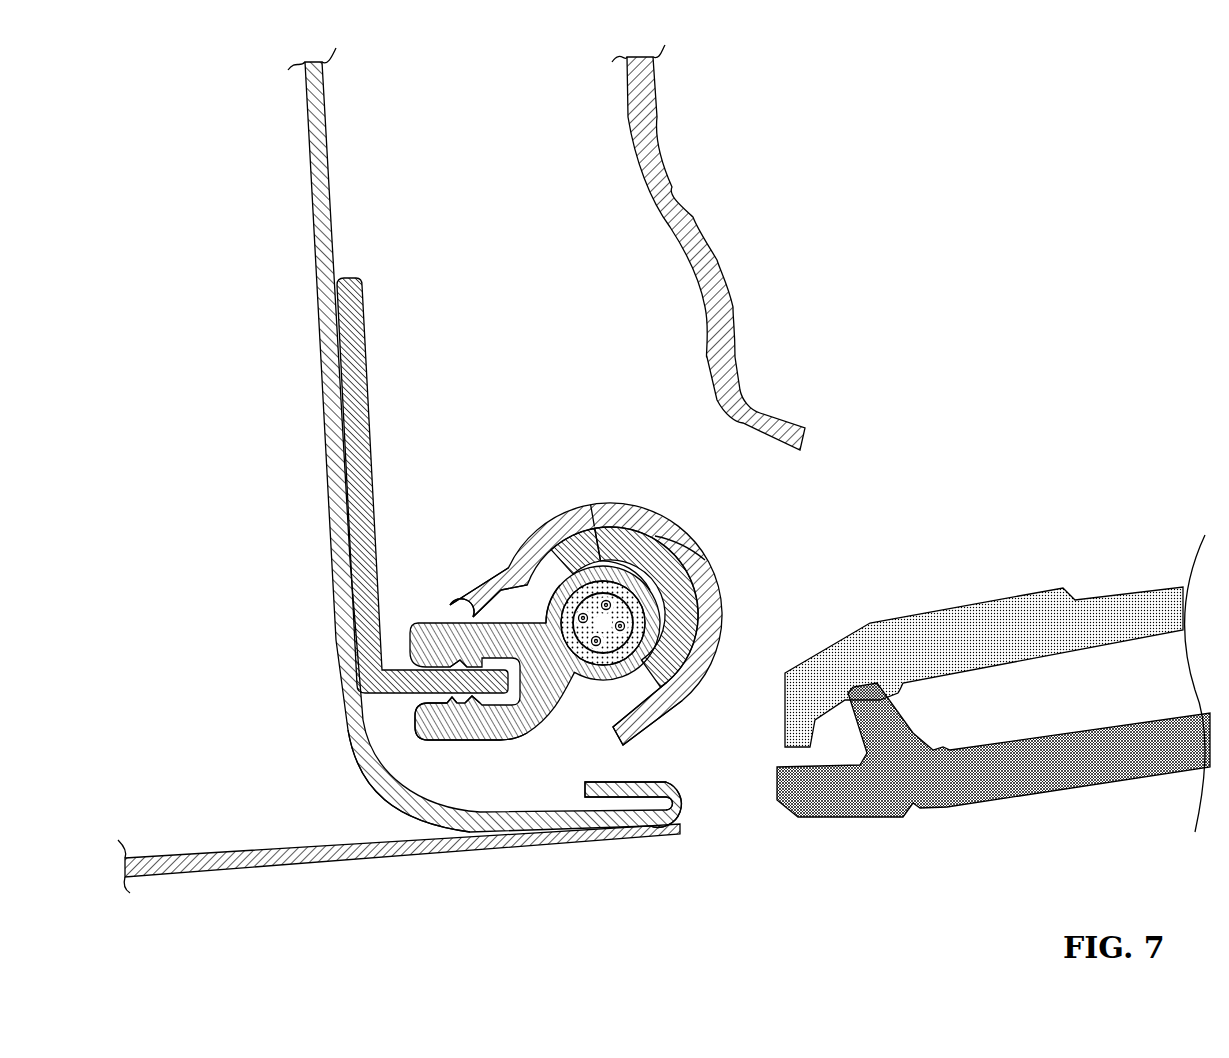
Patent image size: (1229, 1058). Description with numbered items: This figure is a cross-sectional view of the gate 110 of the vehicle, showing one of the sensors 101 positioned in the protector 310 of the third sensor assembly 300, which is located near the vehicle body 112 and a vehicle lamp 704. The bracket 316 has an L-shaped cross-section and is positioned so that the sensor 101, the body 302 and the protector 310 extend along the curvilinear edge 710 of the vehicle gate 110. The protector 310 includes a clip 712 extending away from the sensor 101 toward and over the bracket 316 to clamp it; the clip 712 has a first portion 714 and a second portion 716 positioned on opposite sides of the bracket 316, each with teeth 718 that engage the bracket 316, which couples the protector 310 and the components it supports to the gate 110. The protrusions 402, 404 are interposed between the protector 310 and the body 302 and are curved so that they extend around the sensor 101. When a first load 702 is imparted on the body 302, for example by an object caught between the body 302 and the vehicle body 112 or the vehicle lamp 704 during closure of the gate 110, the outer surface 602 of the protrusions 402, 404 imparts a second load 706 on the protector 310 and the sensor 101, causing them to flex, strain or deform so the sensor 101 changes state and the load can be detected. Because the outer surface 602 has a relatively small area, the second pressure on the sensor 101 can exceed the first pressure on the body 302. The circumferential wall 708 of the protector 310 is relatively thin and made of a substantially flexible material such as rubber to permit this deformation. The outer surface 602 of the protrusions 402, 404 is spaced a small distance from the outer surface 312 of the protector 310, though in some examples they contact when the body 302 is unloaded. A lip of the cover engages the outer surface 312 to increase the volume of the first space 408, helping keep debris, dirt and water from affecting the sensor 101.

The gate 110 is at (447, 489).
The vehicle body 112 is at (715, 265).
The bracket 316 is at (360, 300).
The third sensor assembly 300 is at (620, 549).
The body 302 is at (720, 622).
The protrusion 402 is at (587, 507).
The protrusion 404 is at (593, 528).
The first space 408 is at (523, 603).
The first load 702 is at (708, 542).
The second load 706 is at (735, 566).
The circumferential wall 708 is at (560, 580).
The outer surface 312 is at (520, 580).
The first portion 714 is at (433, 624).
The second portion 716 is at (453, 745).
The teeth 718 is at (412, 667).
The protector 310 is at (514, 680).
The outer surface 602 is at (672, 655).
The sensor 101 is at (581, 680).
The clip 712 is at (380, 753).
The edge 710 is at (690, 812).
The vehicle lamp 704 is at (790, 831).